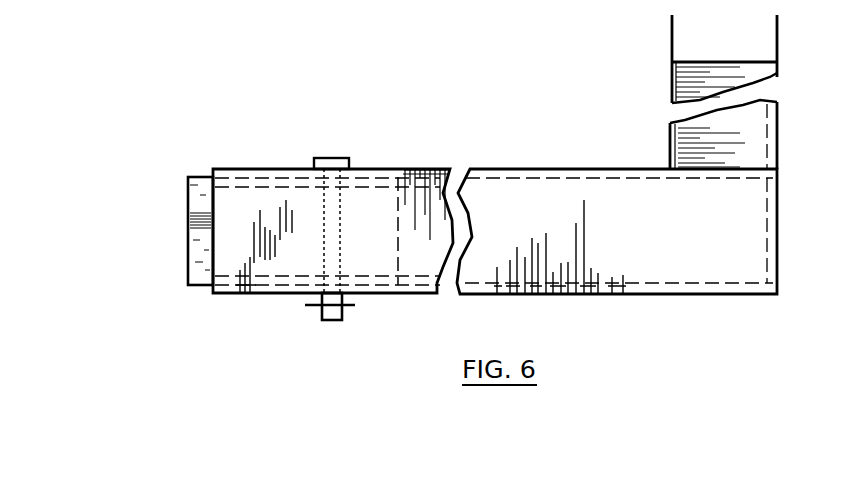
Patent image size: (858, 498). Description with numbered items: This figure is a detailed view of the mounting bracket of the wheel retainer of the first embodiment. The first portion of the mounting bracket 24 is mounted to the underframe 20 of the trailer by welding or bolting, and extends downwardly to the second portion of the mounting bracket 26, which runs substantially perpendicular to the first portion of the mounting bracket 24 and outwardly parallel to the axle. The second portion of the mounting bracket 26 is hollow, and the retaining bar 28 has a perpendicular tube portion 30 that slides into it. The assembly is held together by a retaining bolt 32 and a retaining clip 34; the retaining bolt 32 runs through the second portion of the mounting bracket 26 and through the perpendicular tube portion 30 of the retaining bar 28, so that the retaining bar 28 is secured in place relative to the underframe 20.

The underframe 20 is at (687, 27).
The first portion of the mounting bracket 24 is at (670, 127).
The second portion of the mounting bracket 26 is at (706, 262).
The retaining bar 28 is at (197, 176).
The perpendicular tube portion 30 is at (398, 231).
The retaining bolt 32 is at (323, 158).
The retaining clip 34 is at (310, 305).